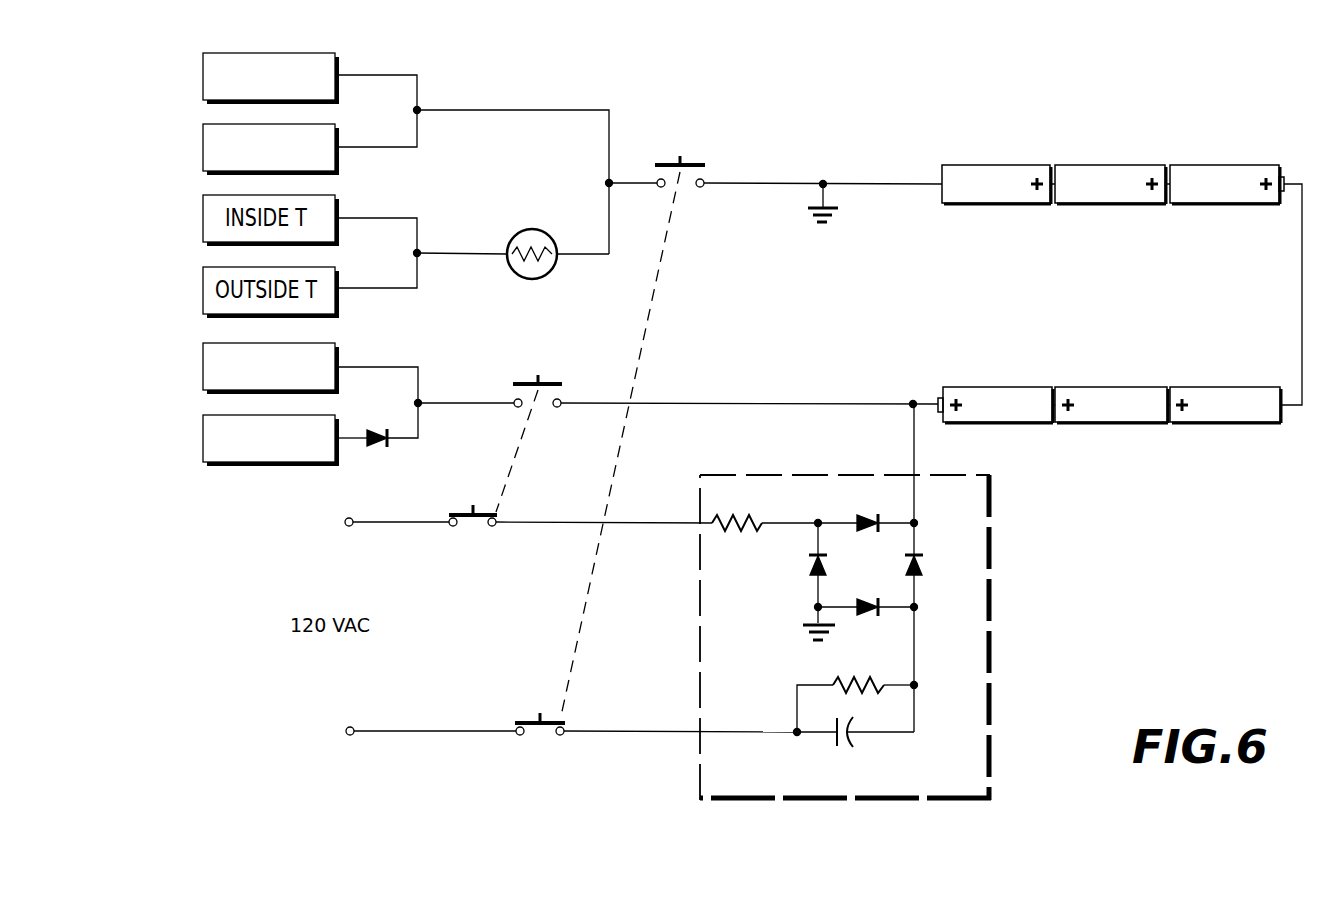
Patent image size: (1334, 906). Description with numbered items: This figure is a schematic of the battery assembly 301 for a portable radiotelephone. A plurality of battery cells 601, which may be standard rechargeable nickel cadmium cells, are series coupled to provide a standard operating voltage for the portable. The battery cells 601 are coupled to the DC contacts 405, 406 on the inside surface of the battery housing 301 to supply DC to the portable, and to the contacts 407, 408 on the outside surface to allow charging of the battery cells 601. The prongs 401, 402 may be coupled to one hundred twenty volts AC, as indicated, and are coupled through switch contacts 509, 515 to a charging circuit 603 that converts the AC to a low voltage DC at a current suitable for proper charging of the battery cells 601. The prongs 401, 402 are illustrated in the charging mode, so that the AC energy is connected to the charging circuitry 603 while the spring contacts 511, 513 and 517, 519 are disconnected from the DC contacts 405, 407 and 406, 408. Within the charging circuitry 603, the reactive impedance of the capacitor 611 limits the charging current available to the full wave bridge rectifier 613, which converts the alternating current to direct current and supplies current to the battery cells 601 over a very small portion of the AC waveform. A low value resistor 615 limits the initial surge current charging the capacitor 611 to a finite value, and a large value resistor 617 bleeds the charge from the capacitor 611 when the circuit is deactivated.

The battery assembly 301 is at (1186, 674).
The prong 401 is at (345, 522).
The prong 402 is at (346, 731).
The DC contact 405 is at (203, 364).
The DC contact 406 is at (203, 74).
The outside contact 407 is at (203, 436).
The outside contact 408 is at (203, 144).
The switch contact 509 is at (505, 526).
The spring contact 511 is at (494, 407).
The spring contact 513 is at (575, 407).
The switch contact 515 is at (576, 735).
The spring contact 517 is at (643, 186).
The spring contact 519 is at (711, 186).
The battery cell 601 is at (990, 165).
The charging circuit 603 is at (992, 625).
The capacitor 611 is at (845, 748).
The full wave bridge rectifier 613 is at (890, 583).
The low value resistor 615 is at (742, 527).
The large value resistor 617 is at (853, 678).